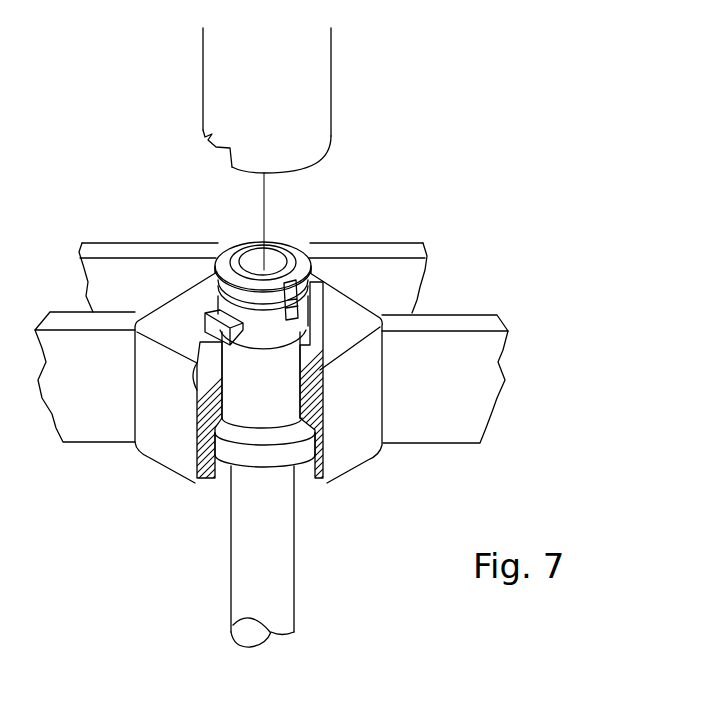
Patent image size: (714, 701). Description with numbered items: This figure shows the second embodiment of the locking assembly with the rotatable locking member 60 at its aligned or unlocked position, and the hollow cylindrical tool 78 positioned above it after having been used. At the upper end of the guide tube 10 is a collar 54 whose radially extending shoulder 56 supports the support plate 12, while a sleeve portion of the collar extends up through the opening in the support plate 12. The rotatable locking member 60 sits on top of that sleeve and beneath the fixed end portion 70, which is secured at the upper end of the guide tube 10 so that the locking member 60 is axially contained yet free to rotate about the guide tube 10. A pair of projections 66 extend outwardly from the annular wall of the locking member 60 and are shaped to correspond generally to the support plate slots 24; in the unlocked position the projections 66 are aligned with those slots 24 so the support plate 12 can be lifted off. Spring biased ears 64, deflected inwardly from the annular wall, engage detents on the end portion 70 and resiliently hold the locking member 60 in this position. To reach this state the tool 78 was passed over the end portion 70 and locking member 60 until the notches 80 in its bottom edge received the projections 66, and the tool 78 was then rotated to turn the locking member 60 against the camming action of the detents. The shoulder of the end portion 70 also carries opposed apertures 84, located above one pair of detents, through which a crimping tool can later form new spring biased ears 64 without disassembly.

The guide tube 10 is at (245, 525).
The support plate 12 is at (423, 327).
The support plate slots 24 is at (202, 415).
The collar 54 is at (282, 394).
The radially extending shoulder 56 is at (296, 454).
The rotatable locking member 60 is at (204, 299).
The spring biased ears 64 is at (299, 313).
The projections 66 is at (193, 368).
The end portion 70 is at (290, 236).
The hollow cylindrical tool 78 is at (266, 100).
The notches 80 is at (230, 160).
The apertures 84 is at (228, 243).